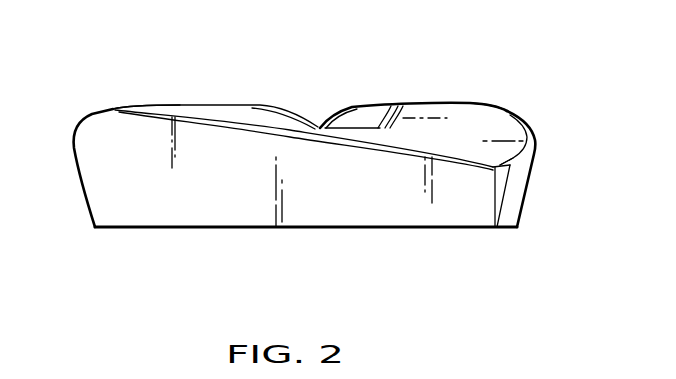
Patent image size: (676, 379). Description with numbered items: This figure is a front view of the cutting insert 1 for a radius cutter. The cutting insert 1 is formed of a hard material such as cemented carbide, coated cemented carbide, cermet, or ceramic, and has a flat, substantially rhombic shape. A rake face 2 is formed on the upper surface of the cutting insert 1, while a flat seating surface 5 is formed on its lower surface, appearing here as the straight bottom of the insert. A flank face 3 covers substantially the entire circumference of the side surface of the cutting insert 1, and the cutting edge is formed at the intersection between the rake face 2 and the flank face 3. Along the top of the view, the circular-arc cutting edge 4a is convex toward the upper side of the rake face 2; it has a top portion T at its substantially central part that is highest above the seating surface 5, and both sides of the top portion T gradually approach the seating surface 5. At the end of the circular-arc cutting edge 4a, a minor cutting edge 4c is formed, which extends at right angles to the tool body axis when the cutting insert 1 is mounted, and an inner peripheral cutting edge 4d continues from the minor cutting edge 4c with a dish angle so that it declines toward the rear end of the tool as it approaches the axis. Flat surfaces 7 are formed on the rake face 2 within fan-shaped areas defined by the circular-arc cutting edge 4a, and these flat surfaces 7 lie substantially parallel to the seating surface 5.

The cutting insert 1 is at (477, 86).
The rake face 2 is at (196, 111).
The flank face 3 is at (333, 212).
The circular-arc cutting edge 4a is at (100, 113).
The minor cutting edge 4c is at (540, 140).
The inner peripheral cutting edge 4d is at (520, 156).
The seating surface 5 is at (226, 232).
The flat surface 7 is at (242, 103).
The top portion T is at (130, 103).